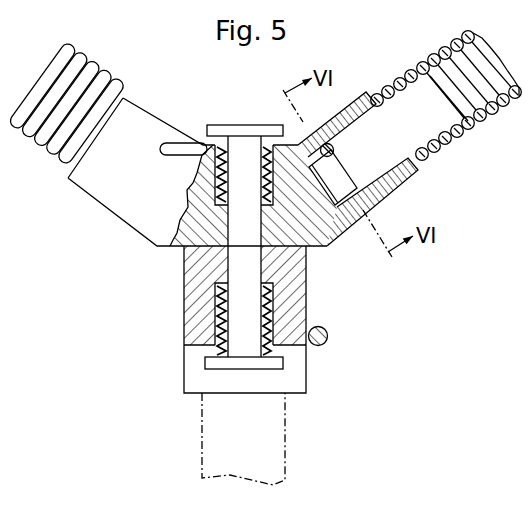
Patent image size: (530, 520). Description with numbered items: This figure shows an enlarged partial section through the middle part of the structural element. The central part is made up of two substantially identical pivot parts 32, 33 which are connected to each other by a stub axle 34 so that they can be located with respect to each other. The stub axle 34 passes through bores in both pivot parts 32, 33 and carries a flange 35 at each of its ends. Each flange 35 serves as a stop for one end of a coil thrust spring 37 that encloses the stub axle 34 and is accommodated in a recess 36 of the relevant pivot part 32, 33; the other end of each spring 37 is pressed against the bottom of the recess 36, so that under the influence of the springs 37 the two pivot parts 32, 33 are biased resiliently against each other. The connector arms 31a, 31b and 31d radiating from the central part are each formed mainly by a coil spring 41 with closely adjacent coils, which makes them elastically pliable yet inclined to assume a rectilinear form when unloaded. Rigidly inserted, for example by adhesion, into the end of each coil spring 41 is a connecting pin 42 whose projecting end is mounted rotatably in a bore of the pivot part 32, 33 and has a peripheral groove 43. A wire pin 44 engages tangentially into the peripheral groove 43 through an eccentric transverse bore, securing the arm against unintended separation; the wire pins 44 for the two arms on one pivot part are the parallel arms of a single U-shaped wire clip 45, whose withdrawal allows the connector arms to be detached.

The connector arm 31a is at (432, 57).
The connector arm 31b is at (95, 85).
The connector arm 31d is at (212, 435).
The pivot part 32 is at (105, 187).
The pivot part 33 is at (183, 288).
The stub axle 34 is at (243, 263).
The flange 35 is at (237, 128).
The recess 36 is at (220, 198).
The coil thrust spring 37 is at (220, 176).
The coil spring 41 is at (487, 122).
The connecting pin 42 is at (446, 148).
The peripheral groove 43 is at (340, 172).
The wire pin 44 is at (325, 146).
The U-shaped wire clip 45 is at (172, 146).